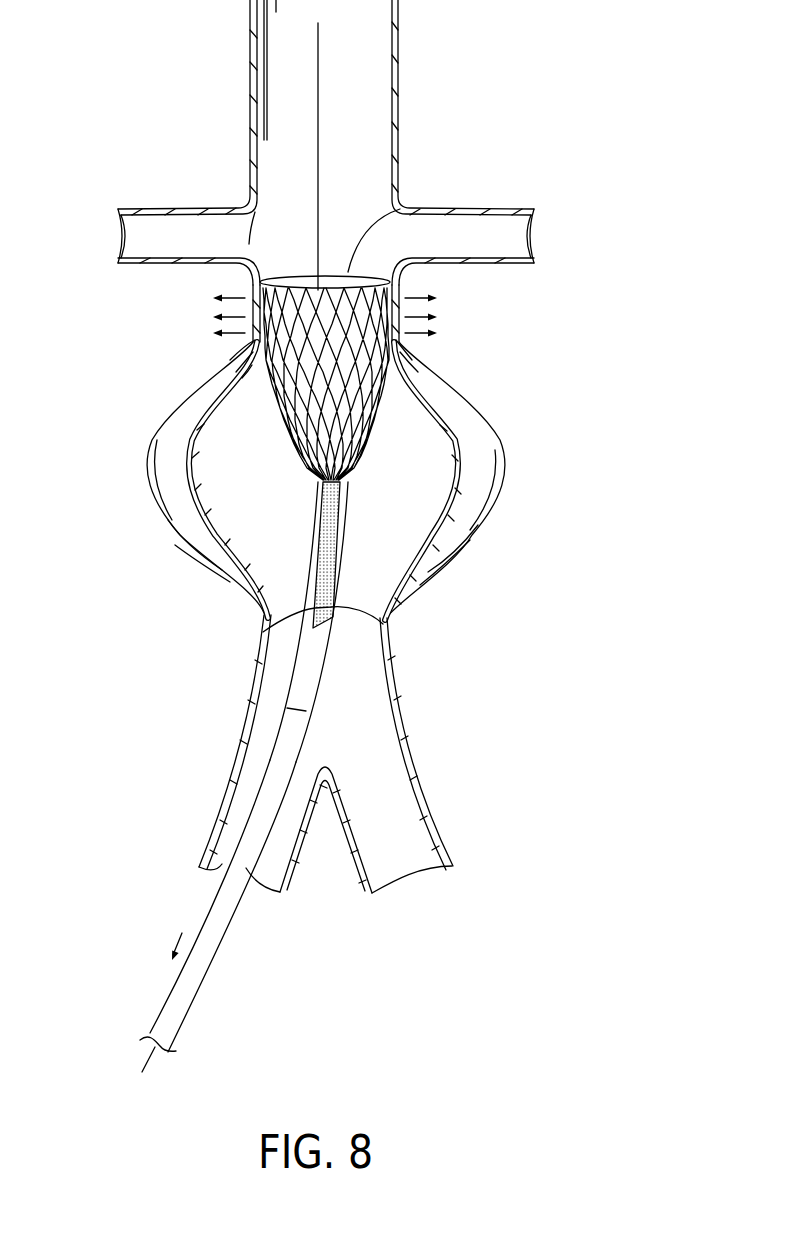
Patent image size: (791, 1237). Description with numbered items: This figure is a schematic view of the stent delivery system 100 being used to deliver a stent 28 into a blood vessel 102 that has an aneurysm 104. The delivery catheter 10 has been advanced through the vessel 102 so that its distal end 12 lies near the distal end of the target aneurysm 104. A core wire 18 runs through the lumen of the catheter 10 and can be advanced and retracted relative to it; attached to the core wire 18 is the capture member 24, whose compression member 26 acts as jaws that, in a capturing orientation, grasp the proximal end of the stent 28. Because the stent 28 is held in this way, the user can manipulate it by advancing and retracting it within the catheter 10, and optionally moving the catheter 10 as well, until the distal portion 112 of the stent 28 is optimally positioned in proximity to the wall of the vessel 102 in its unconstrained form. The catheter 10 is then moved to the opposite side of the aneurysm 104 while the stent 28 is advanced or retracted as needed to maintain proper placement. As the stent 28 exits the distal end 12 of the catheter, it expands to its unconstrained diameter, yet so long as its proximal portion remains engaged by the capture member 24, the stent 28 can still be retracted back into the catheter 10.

The delivery catheter 10 is at (208, 970).
The distal end 12 is at (370, 511).
The core wire 18 is at (319, 108).
The capture member 24 is at (307, 637).
The compression member 26 is at (407, 634).
The stent 28 is at (365, 443).
The stent delivery system 100 is at (137, 905).
The blood vessel 102 is at (250, 95).
The aneurysm 104 is at (150, 438).
The distal portion 112 is at (405, 291).